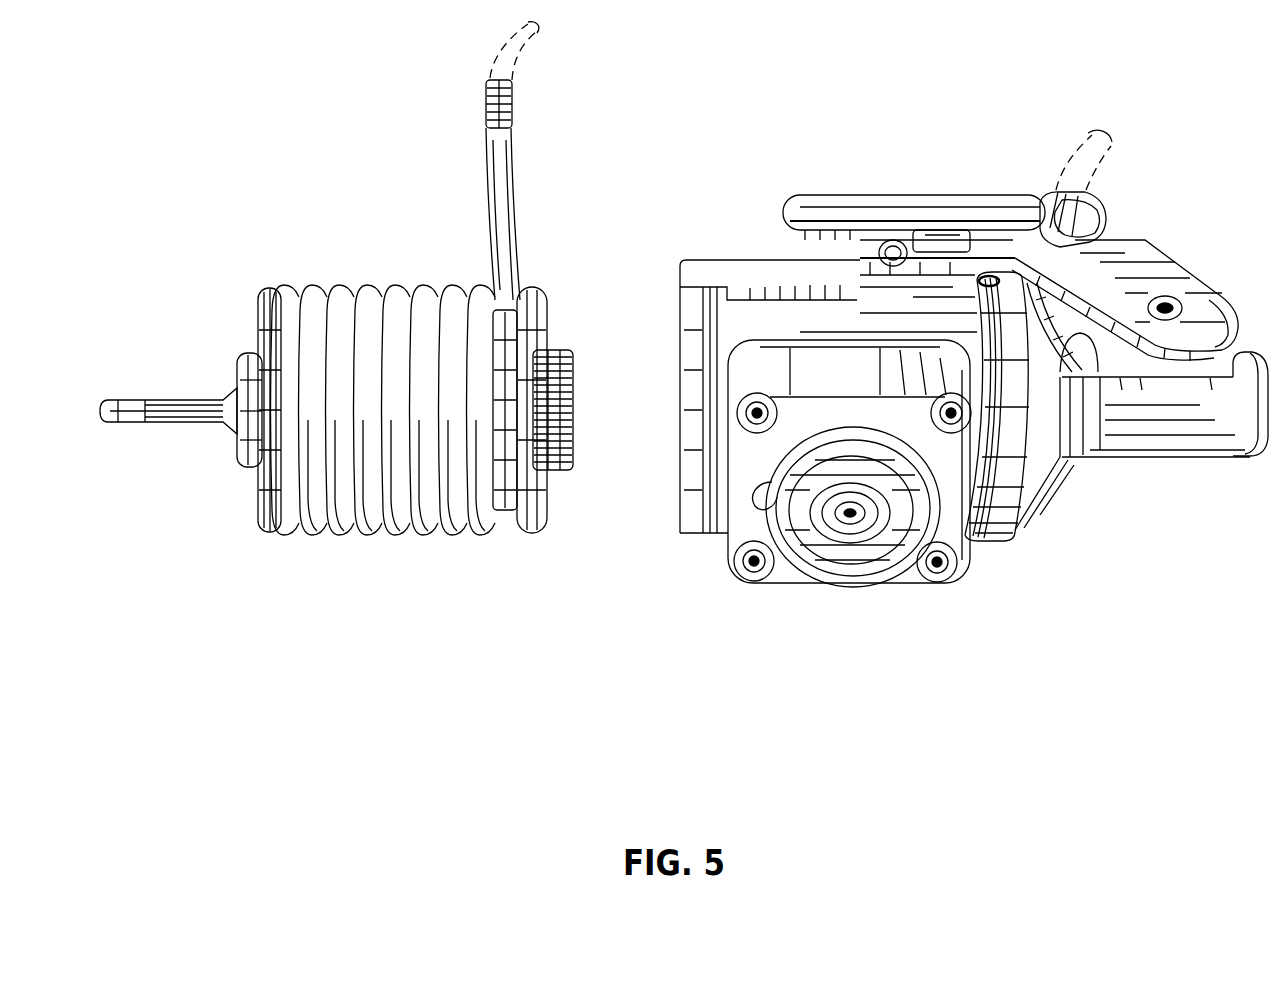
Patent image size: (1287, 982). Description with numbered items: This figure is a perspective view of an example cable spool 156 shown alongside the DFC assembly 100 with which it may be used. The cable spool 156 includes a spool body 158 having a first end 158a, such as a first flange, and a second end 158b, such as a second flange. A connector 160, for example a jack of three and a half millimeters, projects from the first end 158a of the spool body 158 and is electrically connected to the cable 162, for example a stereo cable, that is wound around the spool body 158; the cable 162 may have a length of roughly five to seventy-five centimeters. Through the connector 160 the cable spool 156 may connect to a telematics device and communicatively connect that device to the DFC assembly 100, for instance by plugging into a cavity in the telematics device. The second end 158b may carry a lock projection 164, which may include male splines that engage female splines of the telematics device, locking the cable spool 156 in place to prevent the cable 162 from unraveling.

The DFC assembly 100 is at (890, 147).
The cable spool 156 is at (358, 196).
The spool body 158 is at (392, 565).
The first end 158a is at (258, 510).
The second end 158b is at (538, 533).
The connector 160 is at (178, 403).
The cable 162 is at (515, 245).
The lock projection 164 is at (573, 388).